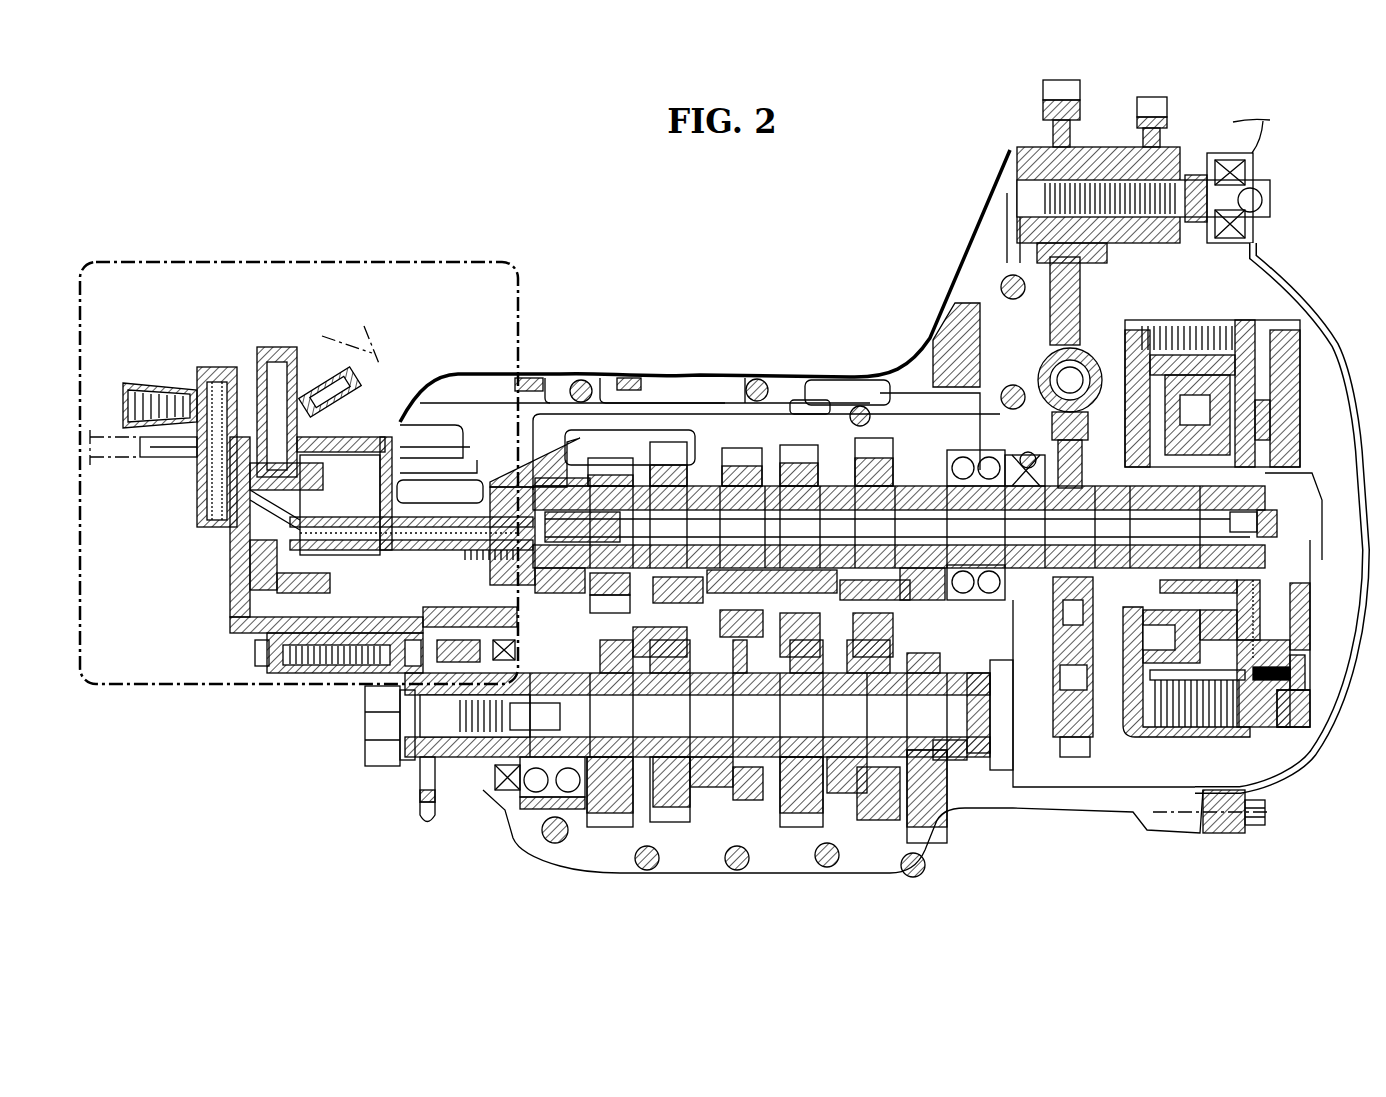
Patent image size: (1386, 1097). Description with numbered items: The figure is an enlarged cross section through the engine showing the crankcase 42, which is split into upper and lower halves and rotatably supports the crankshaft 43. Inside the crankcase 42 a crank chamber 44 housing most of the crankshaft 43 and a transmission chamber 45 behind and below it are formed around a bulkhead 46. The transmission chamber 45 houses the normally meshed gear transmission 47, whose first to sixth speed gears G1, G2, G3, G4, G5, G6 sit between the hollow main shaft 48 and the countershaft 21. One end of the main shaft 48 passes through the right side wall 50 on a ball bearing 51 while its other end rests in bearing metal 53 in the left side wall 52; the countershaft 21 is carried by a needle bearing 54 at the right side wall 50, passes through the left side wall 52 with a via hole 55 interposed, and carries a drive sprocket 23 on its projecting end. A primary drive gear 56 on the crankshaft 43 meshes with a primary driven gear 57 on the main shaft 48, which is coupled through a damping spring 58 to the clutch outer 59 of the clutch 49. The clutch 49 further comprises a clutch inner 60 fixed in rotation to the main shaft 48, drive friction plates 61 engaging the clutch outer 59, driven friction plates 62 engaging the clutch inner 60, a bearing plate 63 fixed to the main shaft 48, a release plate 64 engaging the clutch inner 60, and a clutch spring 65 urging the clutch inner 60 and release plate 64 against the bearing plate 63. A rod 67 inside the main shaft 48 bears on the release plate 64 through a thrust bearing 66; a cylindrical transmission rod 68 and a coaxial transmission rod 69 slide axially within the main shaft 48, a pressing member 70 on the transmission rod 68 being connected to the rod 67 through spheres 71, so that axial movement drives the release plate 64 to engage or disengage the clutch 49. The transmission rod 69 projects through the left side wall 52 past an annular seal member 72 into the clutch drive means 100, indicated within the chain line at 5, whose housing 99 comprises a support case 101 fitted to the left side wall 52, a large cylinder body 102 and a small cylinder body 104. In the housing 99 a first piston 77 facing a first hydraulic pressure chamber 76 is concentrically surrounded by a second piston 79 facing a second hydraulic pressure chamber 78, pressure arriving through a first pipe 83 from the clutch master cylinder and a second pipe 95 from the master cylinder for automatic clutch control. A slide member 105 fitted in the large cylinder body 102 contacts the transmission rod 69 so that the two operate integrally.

The clutch actuator unit 5 is at (358, 256).
The counter shaft 21 is at (483, 778).
The drive sprocket 23 is at (418, 823).
The crankcase 42 is at (777, 865).
The crankshaft 43 is at (1003, 224).
The crank chamber 44 is at (897, 385).
The transmission chamber 45 is at (675, 434).
The bulkhead 46 is at (807, 400).
The gear transmission 47 is at (640, 455).
The main shaft 48 is at (707, 470).
The clutch 49 is at (1155, 760).
The right side wall 50 is at (993, 300).
The ball bearing 51 is at (974, 451).
The left side wall 52 is at (467, 455).
The bearing metal 53 is at (530, 472).
The needle bearing 54 is at (965, 775).
The via hole 55 is at (563, 790).
The primary drive gear 56 is at (1080, 291).
The primary driven gear 57 is at (1070, 760).
The damping spring 58 is at (1053, 370).
The clutch outer 59 is at (1130, 733).
The clutch inner 60 is at (1260, 710).
The drive friction plates 61 is at (1193, 733).
The driven friction plates 62 is at (1213, 682).
The bearing plate 63 is at (1133, 388).
The release plate 64 is at (1305, 420).
The clutch spring 65 is at (1270, 623).
The thrust bearing 66 is at (1270, 472).
The rod 67 is at (1250, 524).
The transmission rod 68 is at (838, 512).
The transmission rod 69 is at (468, 520).
The pressing member 70 is at (1043, 577).
The spheres 71 is at (1110, 582).
The annular seal member 72 is at (503, 570).
The first hydraulic pressure chamber 76 is at (232, 561).
The first piston 77 is at (235, 589).
The second hydraulic pressure chamber 78 is at (253, 637).
The second piston 79 is at (310, 440).
The first pipe 83 is at (120, 458).
The second pipe 95 is at (318, 388).
The housing 99 is at (345, 690).
The clutch drive means 100 is at (247, 433).
The support case 101 is at (322, 682).
The large cylinder body 102 is at (312, 682).
The small cylinder body 104 is at (235, 544).
The slide member 105 is at (373, 463).
The first speed gear G1 is at (932, 838).
The second speed gear G2 is at (592, 455).
The third speed gear G3 is at (753, 832).
The fourth speed gear G4 is at (804, 830).
The fifth speed gear G5 is at (677, 830).
The sixth speed gear G6 is at (848, 448).